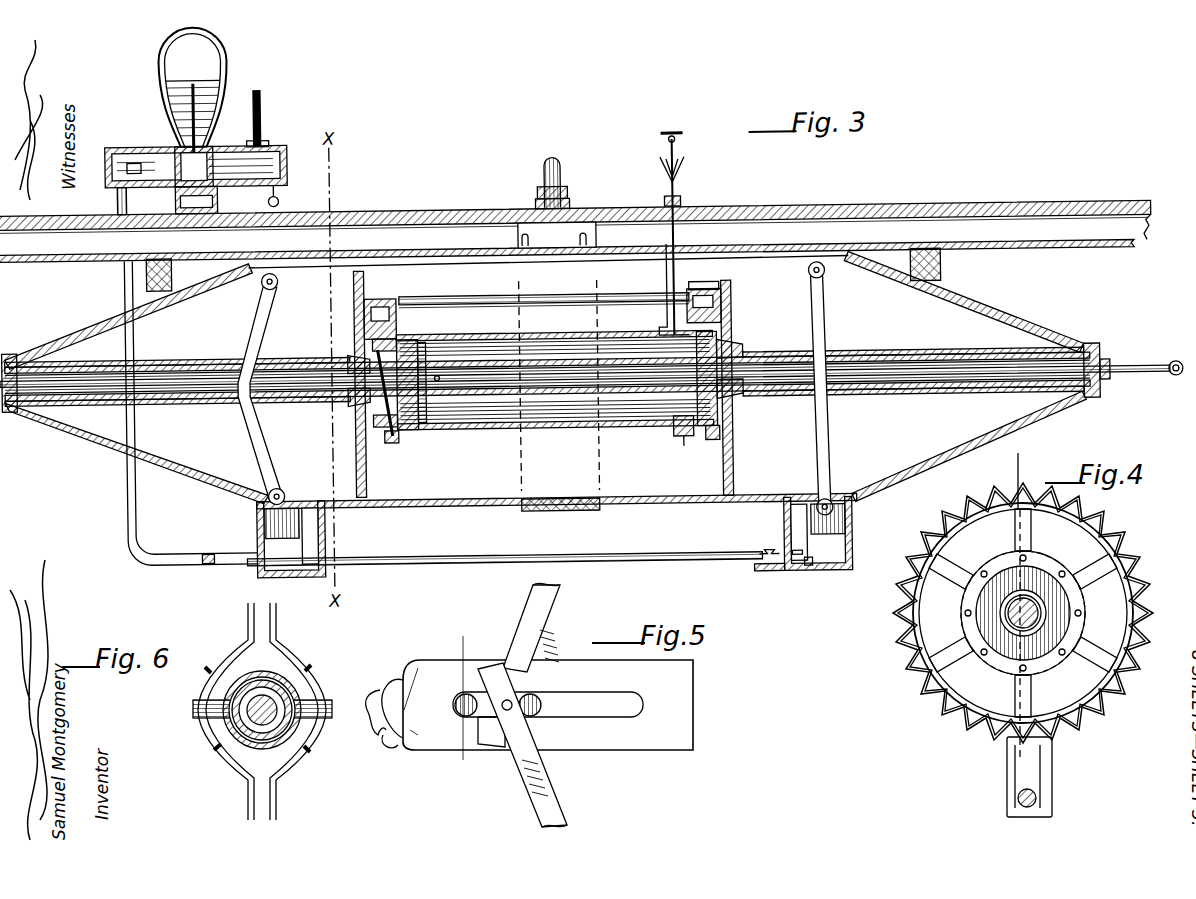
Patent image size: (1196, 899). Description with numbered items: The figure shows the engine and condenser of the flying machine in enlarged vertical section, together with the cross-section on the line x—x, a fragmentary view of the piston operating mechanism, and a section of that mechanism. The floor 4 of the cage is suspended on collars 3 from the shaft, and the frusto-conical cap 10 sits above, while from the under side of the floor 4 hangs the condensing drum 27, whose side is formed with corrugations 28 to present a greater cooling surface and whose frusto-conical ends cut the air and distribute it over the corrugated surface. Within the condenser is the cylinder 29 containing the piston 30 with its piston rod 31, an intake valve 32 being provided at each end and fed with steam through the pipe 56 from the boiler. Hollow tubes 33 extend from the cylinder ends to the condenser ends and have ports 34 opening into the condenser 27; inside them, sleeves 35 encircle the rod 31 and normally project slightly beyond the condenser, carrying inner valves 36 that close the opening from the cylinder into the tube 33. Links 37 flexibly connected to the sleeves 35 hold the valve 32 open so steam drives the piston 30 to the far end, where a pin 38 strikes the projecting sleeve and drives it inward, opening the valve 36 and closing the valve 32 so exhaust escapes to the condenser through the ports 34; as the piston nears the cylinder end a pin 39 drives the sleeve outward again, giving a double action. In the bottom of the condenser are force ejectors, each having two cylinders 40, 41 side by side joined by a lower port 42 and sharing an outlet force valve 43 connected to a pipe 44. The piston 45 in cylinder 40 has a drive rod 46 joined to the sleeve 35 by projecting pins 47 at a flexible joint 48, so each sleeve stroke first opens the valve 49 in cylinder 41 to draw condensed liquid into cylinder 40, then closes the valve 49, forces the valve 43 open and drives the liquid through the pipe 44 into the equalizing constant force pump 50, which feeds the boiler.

In FIG. 3, the collar 3 is at (575, 204).
In FIG. 3, the floor 4 is at (343, 212).
In FIG. 3, the frusto-conical cap 10 is at (562, 182).
In FIG. 3, the condensing drum 27 is at (978, 304).
In FIG. 4, the condensing drum 27 is at (898, 640).
In FIG. 3, the corrugations 28 is at (864, 475).
In FIG. 4, the corrugations 28 is at (1047, 735).
In FIG. 3, the cylinder 29 is at (617, 428).
In FIG. 4, the cylinder 29 is at (1045, 640).
In FIG. 3, the piston 30 is at (406, 430).
In FIG. 3, the piston rod 31 is at (1147, 370).
In FIG. 4, the piston rod 31 is at (1010, 620).
In FIG. 6, the piston rod 31 is at (245, 695).
In FIG. 5, the piston rod 31 is at (370, 695).
In FIG. 3, the intake valve 32 is at (734, 330).
In FIG. 3, the hollow tube 33 is at (892, 358).
In FIG. 4, the hollow tube 33 is at (1026, 600).
In FIG. 6, the hollow tube 33 is at (285, 745).
In FIG. 5, the hollow tube 33 is at (423, 672).
In FIG. 3, the port 34 is at (762, 353).
In FIG. 3, the sleeve 35 is at (958, 394).
In FIG. 4, the sleeve 35 is at (1038, 606).
In FIG. 6, the sleeve 35 is at (275, 690).
In FIG. 5, the sleeve 35 is at (383, 690).
In FIG. 3, the inner valve 36 is at (352, 358).
In FIG. 3, the link 37 is at (372, 420).
In FIG. 3, the pin 38 is at (1106, 388).
In FIG. 3, the pin 39 is at (436, 427).
In FIG. 3, the cylinder 40 is at (257, 532).
In FIG. 4, the cylinder 40 is at (1008, 778).
In FIG. 3, the cylinder 41 is at (782, 530).
In FIG. 4, the cylinder 41 is at (1022, 755).
In FIG. 3, the lower port 42 is at (804, 574).
In FIG. 3, the outlet force valve 43 is at (758, 574).
In FIG. 3, the pipe 44 is at (451, 552).
In FIG. 3, the piston 45 is at (300, 528).
In FIG. 3, the drive rod 46 is at (814, 428).
In FIG. 6, the drive rod 46 is at (315, 680).
In FIG. 5, the drive rod 46 is at (545, 798).
In FIG. 6, the projecting pin 47 is at (200, 718).
In FIG. 5, the projecting pin 47 is at (473, 720).
In FIG. 5, the flexible joint 48 is at (512, 702).
In FIG. 3, the valve 49 is at (793, 576).
In FIG. 3, the equalizing constant force pump 50 is at (215, 72).
In FIG. 3, the pipe 56 is at (483, 302).